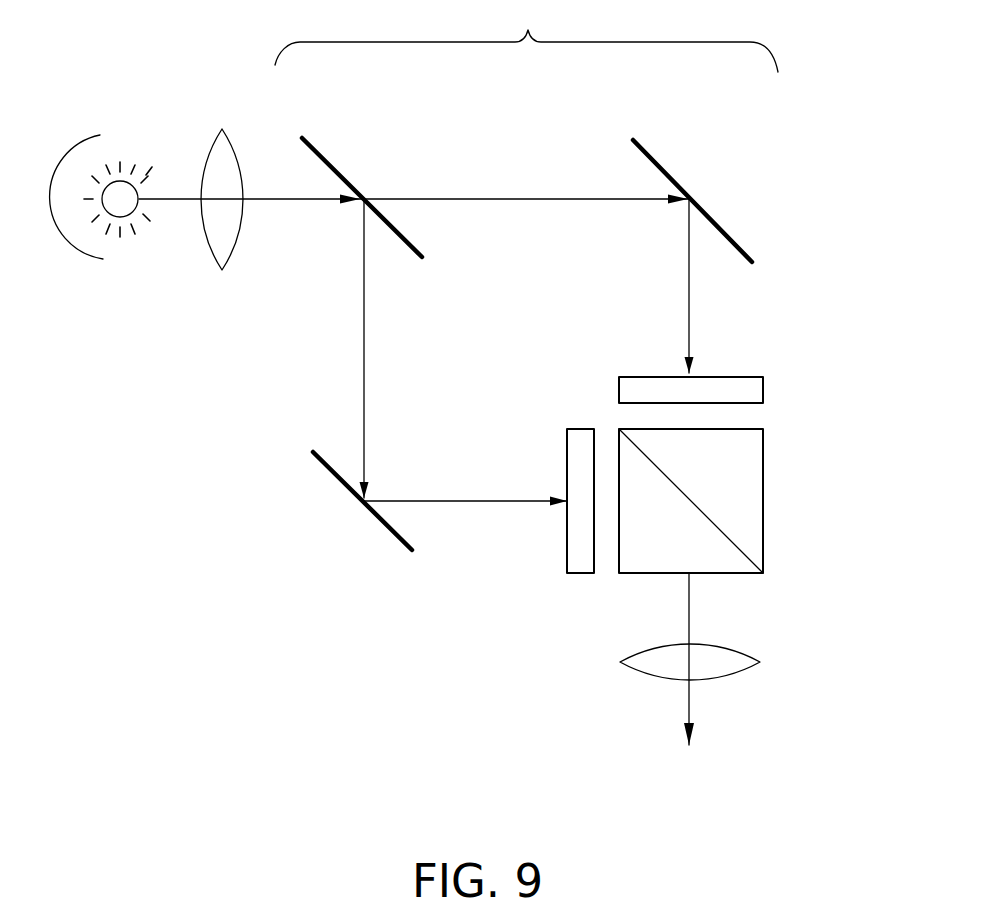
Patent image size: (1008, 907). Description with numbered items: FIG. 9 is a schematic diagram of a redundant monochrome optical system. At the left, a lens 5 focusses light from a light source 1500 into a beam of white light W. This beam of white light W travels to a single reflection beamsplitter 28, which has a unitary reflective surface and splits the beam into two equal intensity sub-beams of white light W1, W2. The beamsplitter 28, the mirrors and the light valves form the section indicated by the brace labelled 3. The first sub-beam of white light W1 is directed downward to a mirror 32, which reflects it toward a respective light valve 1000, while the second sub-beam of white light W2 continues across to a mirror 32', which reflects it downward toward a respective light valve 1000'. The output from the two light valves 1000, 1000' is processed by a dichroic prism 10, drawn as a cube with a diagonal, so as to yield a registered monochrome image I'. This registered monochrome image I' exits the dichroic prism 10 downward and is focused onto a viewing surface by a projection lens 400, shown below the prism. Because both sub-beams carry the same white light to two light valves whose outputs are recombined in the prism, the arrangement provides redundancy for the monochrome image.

The light source 1500 is at (136, 128).
The lens 5 is at (205, 242).
The beam of white light W is at (283, 201).
The single reflection beamsplitter 28 is at (325, 153).
The interferometer section 3 is at (526, 36).
The sub-beam of white light W2 is at (553, 200).
The mirror 32' is at (718, 201).
The sub-beam of white light W1 is at (365, 408).
The mirror 32 is at (362, 523).
The light valve 1000 is at (534, 528).
The light valve 1000' is at (747, 387).
The dichroic prism 10 is at (764, 503).
The registered monochrome image I' is at (713, 659).
The projection lens 400 is at (733, 658).